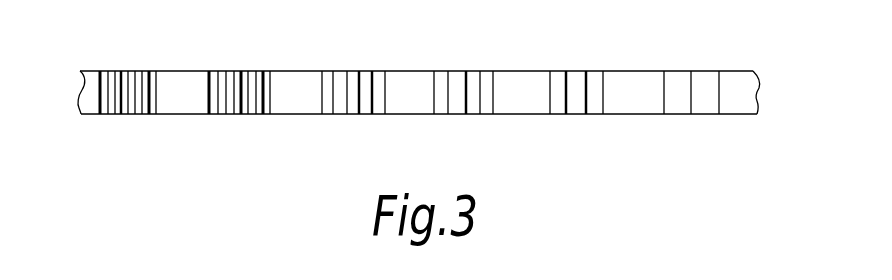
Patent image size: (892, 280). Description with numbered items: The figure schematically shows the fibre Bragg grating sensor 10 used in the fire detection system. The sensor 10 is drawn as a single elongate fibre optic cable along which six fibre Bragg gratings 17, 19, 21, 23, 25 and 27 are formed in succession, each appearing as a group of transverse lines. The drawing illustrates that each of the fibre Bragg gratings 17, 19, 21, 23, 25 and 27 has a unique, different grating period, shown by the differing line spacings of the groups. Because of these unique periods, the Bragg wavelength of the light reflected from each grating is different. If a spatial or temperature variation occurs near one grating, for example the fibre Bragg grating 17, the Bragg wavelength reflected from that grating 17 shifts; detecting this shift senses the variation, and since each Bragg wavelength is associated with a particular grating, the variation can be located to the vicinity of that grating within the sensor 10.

The fibre Bragg grating sensor 10 is at (742, 95).
The fibre Bragg grating 17 is at (128, 107).
The fibre Bragg grating 19 is at (236, 107).
The fibre Bragg grating 21 is at (356, 107).
The fibre Bragg grating 23 is at (474, 107).
The fibre Bragg grating 25 is at (579, 107).
The fibre Bragg grating 27 is at (683, 102).